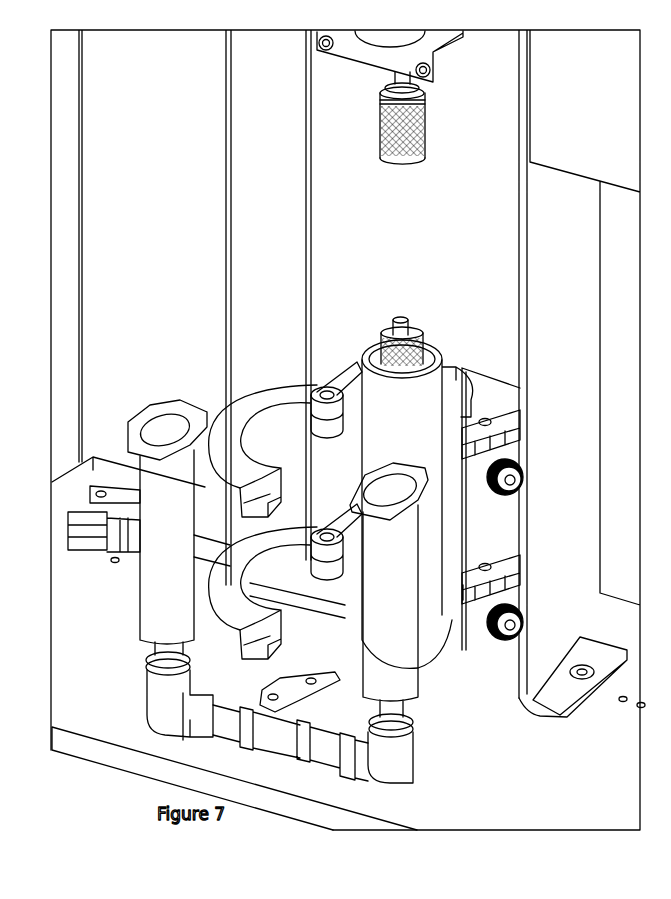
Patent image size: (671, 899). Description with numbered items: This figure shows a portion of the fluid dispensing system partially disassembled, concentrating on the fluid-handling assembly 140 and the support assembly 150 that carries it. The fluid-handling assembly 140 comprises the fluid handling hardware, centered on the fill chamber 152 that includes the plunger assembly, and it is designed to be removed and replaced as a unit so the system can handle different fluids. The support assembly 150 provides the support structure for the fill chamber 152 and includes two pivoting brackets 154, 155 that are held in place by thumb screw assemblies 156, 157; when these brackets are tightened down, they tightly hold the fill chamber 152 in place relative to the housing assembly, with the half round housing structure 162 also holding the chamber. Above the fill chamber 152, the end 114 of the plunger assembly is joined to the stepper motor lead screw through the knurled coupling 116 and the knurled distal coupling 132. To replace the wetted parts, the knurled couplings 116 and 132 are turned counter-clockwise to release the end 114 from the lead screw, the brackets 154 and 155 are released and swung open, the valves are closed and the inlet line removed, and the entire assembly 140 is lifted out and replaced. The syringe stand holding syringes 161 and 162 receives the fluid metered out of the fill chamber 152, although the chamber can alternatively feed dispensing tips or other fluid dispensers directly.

The end of plunger assembly 114 is at (407, 302).
The coupling 116 is at (420, 330).
The distal coupling 132 is at (400, 160).
The fluid-handling assembly 140 is at (120, 698).
The support assembly 150 is at (258, 365).
The fill chamber 152 is at (433, 643).
The pivoting bracket 154 is at (217, 408).
The pivoting bracket 155 is at (283, 625).
The thumb screw assembly 156 is at (503, 450).
The thumb screw assembly 157 is at (505, 590).
The syringe 161 is at (138, 596).
The syringe 162 is at (410, 697).